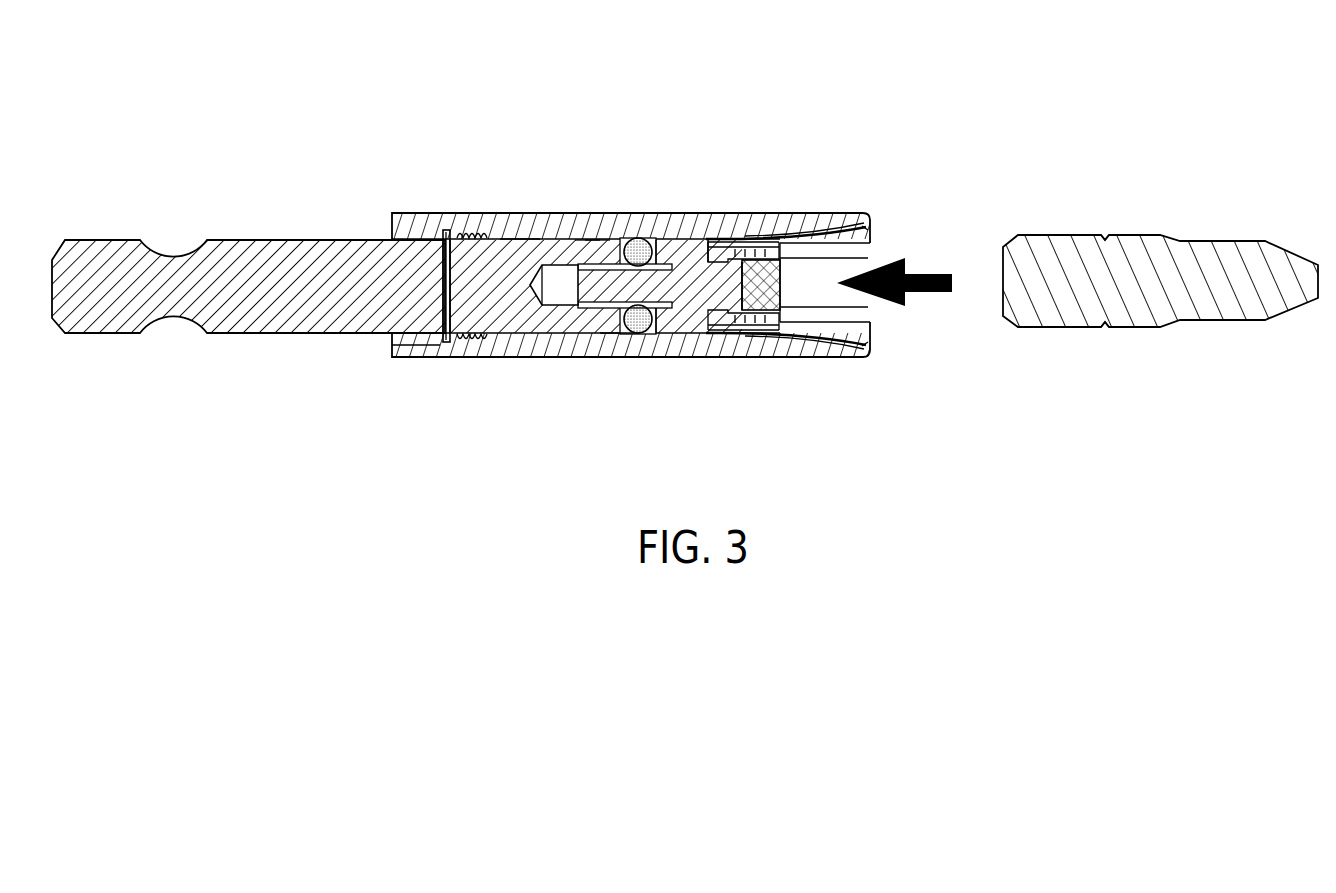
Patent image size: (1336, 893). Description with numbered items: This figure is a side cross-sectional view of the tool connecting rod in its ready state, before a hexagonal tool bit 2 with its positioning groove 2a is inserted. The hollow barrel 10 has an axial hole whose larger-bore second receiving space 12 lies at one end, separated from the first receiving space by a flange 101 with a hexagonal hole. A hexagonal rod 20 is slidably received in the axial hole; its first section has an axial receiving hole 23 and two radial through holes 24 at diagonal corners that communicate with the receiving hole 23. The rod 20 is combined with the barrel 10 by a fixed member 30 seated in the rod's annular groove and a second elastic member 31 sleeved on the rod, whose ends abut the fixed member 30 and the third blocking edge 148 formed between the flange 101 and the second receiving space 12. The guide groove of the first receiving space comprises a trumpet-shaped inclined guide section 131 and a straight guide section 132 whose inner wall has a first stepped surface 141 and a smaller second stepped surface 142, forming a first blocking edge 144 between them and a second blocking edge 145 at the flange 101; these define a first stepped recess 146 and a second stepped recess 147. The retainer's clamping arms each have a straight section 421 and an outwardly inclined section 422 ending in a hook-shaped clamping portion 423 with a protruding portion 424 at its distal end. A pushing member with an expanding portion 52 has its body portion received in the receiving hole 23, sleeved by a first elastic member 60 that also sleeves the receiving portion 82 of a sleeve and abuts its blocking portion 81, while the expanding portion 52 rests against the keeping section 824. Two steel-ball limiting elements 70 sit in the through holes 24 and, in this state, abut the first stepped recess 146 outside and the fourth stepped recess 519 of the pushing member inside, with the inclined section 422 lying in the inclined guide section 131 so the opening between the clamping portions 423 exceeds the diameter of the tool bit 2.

The tool bit 2 is at (1222, 250).
The positioning groove 2a is at (1105, 235).
The barrel 10 is at (822, 222).
The second receiving space 12 is at (425, 338).
The rod 20 is at (232, 208).
The receiving hole 23 is at (548, 318).
The through holes 24 is at (558, 298).
The fixed member 30 is at (443, 233).
The second elastic member 31 is at (453, 237).
The expanding portion 52 is at (698, 335).
The first elastic member 60 is at (728, 250).
The limiting elements 70 is at (626, 335).
The blocking portion 81 is at (790, 240).
The receiving portion 82 is at (757, 248).
The flange 101 is at (522, 237).
The inclined guide section 131 is at (855, 215).
The straight guide section 132 is at (782, 344).
The first stepped surface 141 is at (676, 240).
The second stepped surface 142 is at (592, 237).
The first blocking edge 144 is at (625, 237).
The second blocking edge 145 is at (567, 237).
The first stepped recess 146 is at (662, 240).
The second stepped recess 147 is at (581, 237).
The third blocking edge 148 is at (470, 232).
The straight section 421 is at (813, 350).
The inclined section 422 is at (870, 225).
The clamping portion 423 is at (870, 237).
The protruding portion 424 is at (870, 343).
The fourth stepped recess 519 is at (668, 336).
The keeping section 824 is at (722, 335).